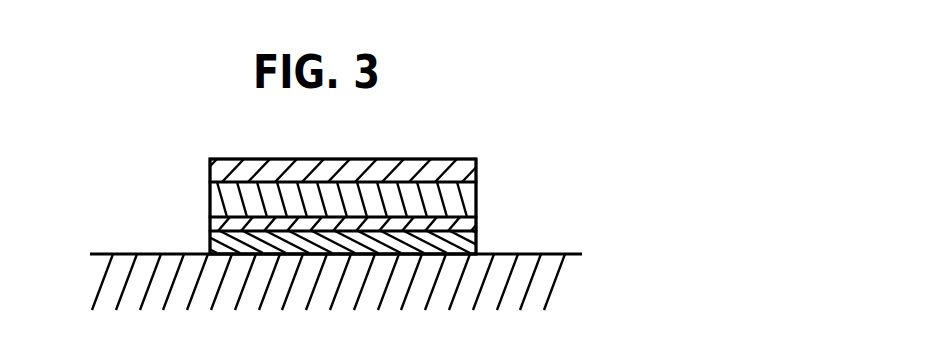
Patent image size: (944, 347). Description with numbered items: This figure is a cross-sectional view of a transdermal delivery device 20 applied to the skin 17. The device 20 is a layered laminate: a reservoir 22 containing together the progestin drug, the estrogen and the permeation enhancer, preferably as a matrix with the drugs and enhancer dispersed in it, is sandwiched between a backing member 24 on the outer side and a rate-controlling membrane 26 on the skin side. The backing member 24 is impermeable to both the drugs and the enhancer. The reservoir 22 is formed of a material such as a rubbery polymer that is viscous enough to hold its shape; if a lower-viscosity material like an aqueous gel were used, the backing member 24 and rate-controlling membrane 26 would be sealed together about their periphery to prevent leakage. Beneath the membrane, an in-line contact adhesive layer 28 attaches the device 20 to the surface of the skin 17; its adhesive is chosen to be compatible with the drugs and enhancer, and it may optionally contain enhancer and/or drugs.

The skin 17 is at (145, 254).
The transdermal delivery device 20 is at (443, 137).
The reservoir 22 is at (472, 190).
The backing member 24 is at (460, 165).
The rate-controlling membrane 26 is at (477, 219).
The in-line contact adhesive layer 28 is at (477, 237).